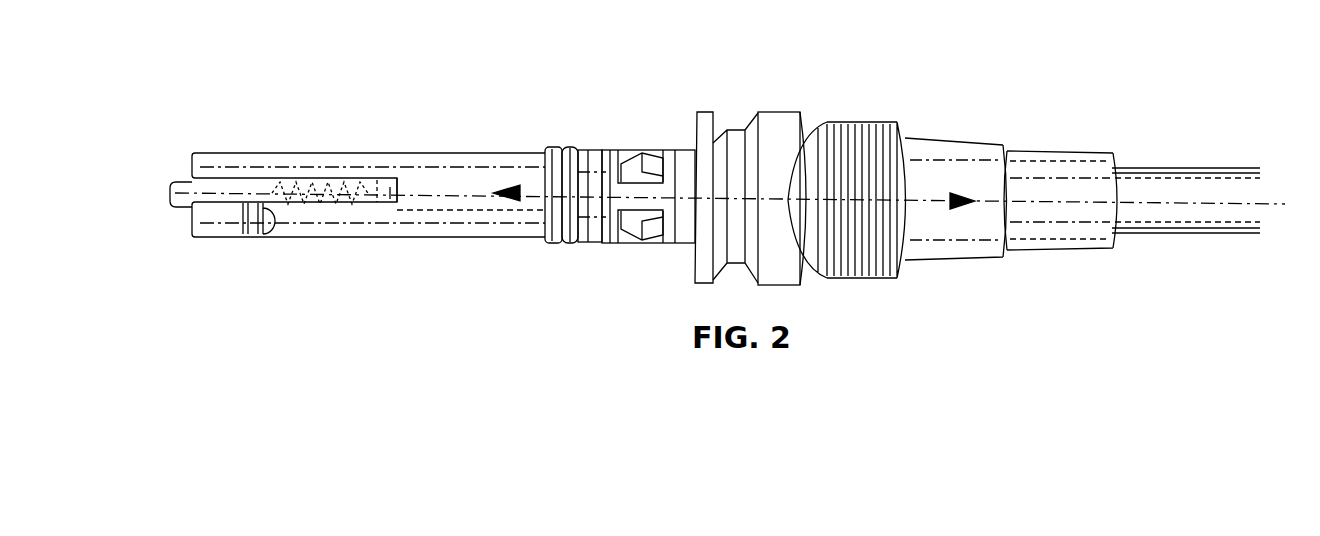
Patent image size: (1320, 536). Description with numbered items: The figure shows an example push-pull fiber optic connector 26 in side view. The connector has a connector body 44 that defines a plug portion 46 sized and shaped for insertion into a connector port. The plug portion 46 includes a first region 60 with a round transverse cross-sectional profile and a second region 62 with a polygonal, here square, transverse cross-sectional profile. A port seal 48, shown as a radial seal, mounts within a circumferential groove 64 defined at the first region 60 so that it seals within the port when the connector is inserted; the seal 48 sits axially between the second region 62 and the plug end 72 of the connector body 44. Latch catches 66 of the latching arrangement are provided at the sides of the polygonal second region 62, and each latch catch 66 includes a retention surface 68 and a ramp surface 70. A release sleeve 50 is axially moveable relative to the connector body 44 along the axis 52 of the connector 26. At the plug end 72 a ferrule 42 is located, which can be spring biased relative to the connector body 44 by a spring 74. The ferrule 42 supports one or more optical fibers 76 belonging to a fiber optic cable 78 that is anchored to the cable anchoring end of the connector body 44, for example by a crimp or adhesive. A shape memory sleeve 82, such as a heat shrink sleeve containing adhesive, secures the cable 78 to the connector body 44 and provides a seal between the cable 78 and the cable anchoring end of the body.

The fiber optic connector 26 is at (425, 255).
The ferrule 42 is at (182, 207).
The connector body 44 is at (498, 243).
The plug portion 46 is at (378, 153).
The port seal 48 is at (568, 152).
The release sleeve 50 is at (778, 115).
The axis 52 is at (925, 197).
The first region 60 is at (544, 243).
The second region 62 is at (680, 245).
The circumferential groove 64 is at (577, 244).
The latch catch 66 is at (656, 150).
The retention surface 68 is at (712, 110).
The ramp surface 70 is at (640, 150).
The plug end 72 is at (190, 160).
The spring 74 is at (330, 207).
The optical fibers 76 is at (372, 202).
The fiber optic cable 78 is at (1170, 233).
The shape memory sleeve 82 is at (1030, 150).